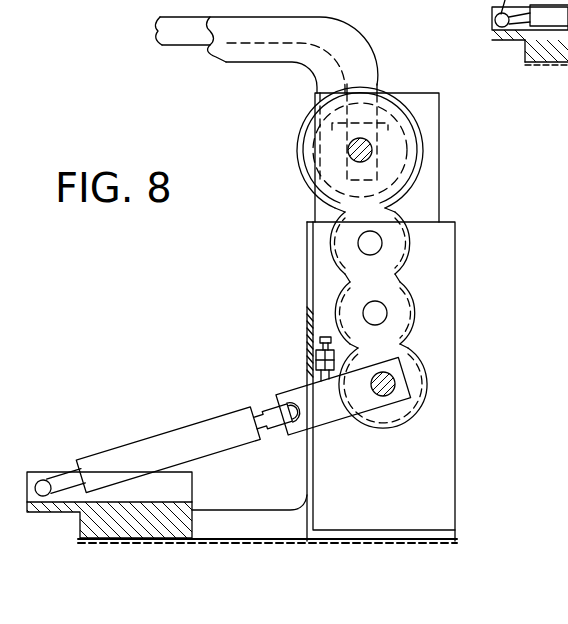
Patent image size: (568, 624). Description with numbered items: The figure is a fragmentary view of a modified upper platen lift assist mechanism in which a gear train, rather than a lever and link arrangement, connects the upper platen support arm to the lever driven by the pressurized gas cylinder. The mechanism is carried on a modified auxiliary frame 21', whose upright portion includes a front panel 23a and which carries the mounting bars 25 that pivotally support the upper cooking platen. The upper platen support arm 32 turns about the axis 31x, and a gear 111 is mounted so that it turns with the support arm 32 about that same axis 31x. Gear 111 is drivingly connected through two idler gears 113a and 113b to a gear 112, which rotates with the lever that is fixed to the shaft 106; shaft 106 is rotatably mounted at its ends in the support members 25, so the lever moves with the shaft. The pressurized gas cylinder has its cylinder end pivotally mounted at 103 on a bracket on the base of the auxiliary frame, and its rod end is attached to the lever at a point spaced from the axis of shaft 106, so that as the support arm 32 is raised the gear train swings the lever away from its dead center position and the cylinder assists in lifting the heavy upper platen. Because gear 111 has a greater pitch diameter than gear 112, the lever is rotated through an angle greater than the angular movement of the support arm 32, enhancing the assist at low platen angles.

The mounting bars 25 is at (418, 95).
The upper platen support arm 32 is at (248, 62).
The gear 111 is at (420, 136).
The axis 31x is at (364, 151).
The idler gear 113a is at (410, 244).
The idler gear 113b is at (413, 295).
The gear 112 is at (420, 362).
The shaft 106 is at (390, 389).
The front panel 23a is at (306, 313).
The cylinder end pivot 103 is at (46, 481).
The auxiliary frame 21' is at (316, 382).